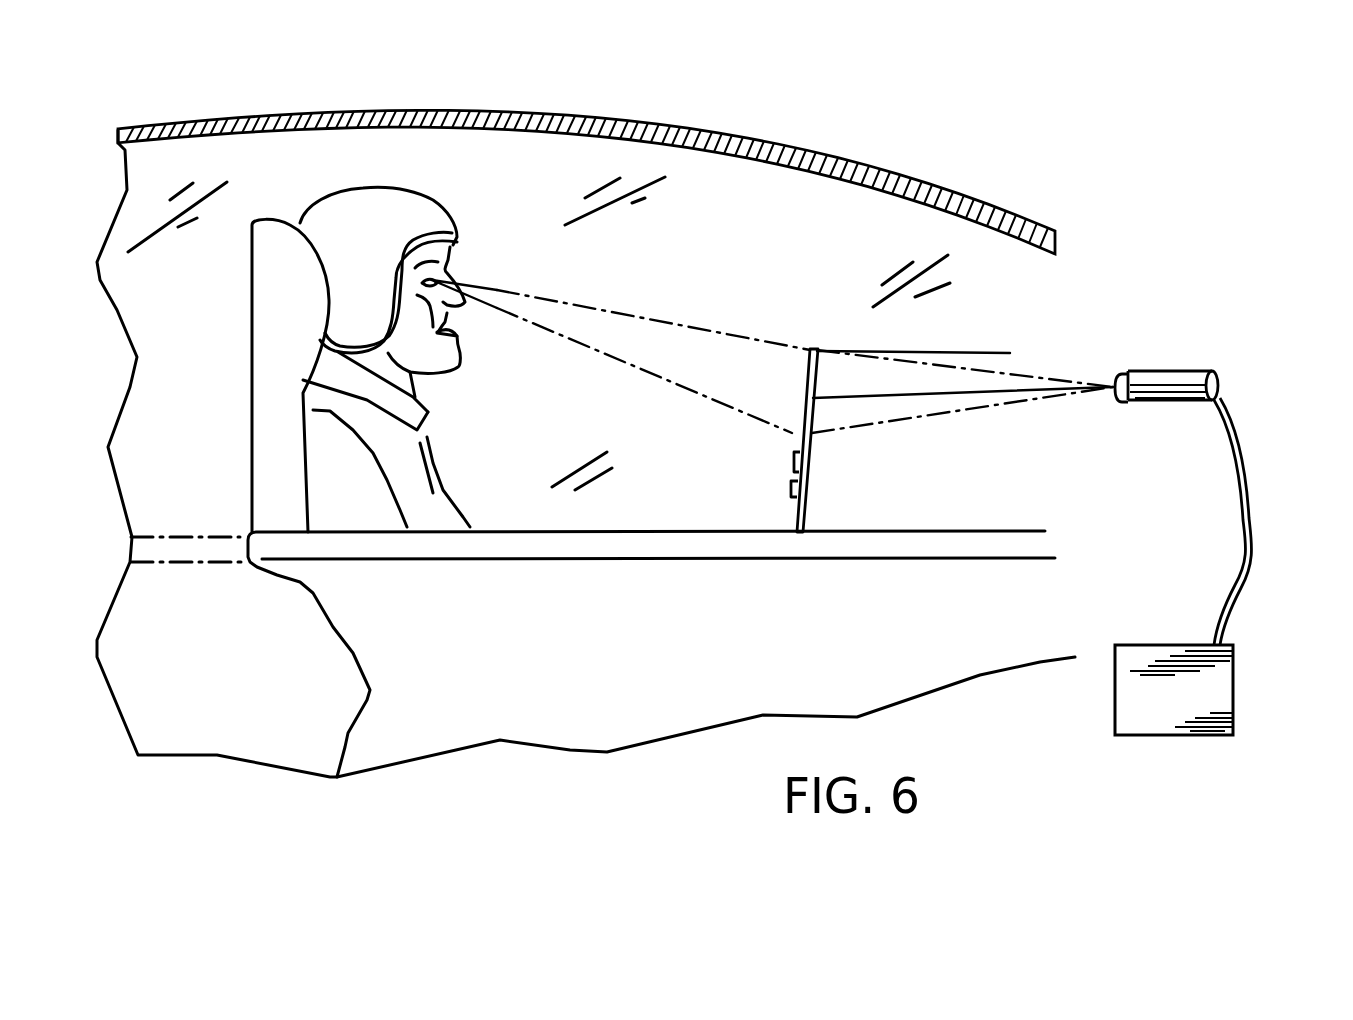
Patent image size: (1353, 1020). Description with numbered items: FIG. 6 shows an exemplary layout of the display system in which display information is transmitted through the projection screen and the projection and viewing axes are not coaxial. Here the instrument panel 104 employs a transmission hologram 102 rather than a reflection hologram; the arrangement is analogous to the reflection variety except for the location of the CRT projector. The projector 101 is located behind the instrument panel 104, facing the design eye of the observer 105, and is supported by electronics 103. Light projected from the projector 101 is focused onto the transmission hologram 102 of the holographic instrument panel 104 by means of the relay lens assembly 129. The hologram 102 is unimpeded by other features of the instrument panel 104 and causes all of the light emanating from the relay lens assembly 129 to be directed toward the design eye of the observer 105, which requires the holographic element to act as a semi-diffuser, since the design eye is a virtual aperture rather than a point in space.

The projector 101 is at (1185, 370).
The transmission hologram 102 is at (806, 373).
The electronics 103 is at (1233, 692).
The instrument panel 104 is at (797, 510).
The observer 105 is at (448, 207).
The relay lens assembly 129 is at (1118, 370).